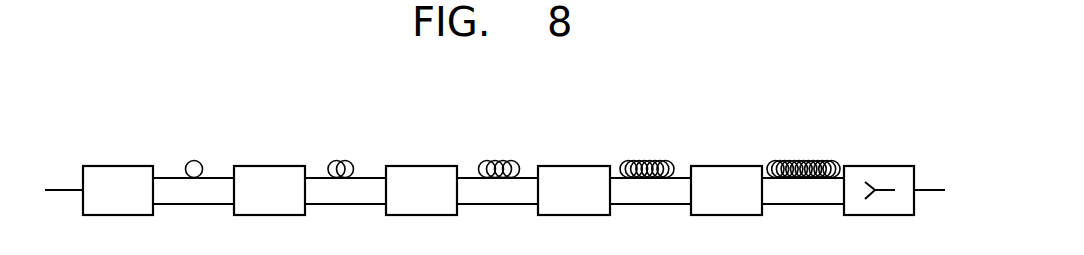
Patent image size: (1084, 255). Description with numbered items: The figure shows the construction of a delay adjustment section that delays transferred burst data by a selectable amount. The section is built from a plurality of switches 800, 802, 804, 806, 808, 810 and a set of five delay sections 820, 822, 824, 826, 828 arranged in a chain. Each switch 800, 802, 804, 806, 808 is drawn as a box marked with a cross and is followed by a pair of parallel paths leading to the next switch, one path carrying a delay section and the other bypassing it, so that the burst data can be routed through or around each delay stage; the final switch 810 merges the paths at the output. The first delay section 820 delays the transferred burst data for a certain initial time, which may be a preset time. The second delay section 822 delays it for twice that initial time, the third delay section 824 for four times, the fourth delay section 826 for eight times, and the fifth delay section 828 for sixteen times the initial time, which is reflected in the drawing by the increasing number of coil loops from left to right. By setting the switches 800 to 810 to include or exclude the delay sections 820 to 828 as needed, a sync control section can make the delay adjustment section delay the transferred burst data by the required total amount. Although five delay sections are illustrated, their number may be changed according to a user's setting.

The switch 800 is at (117, 165).
The switch 802 is at (268, 165).
The switch 804 is at (420, 165).
The switch 806 is at (573, 165).
The switch 808 is at (725, 165).
The switch 810 is at (876, 165).
The first delay section 820 is at (193, 160).
The second delay section 822 is at (338, 160).
The third delay section 824 is at (496, 160).
The fourth delay section 826 is at (644, 160).
The fifth delay section 828 is at (799, 160).